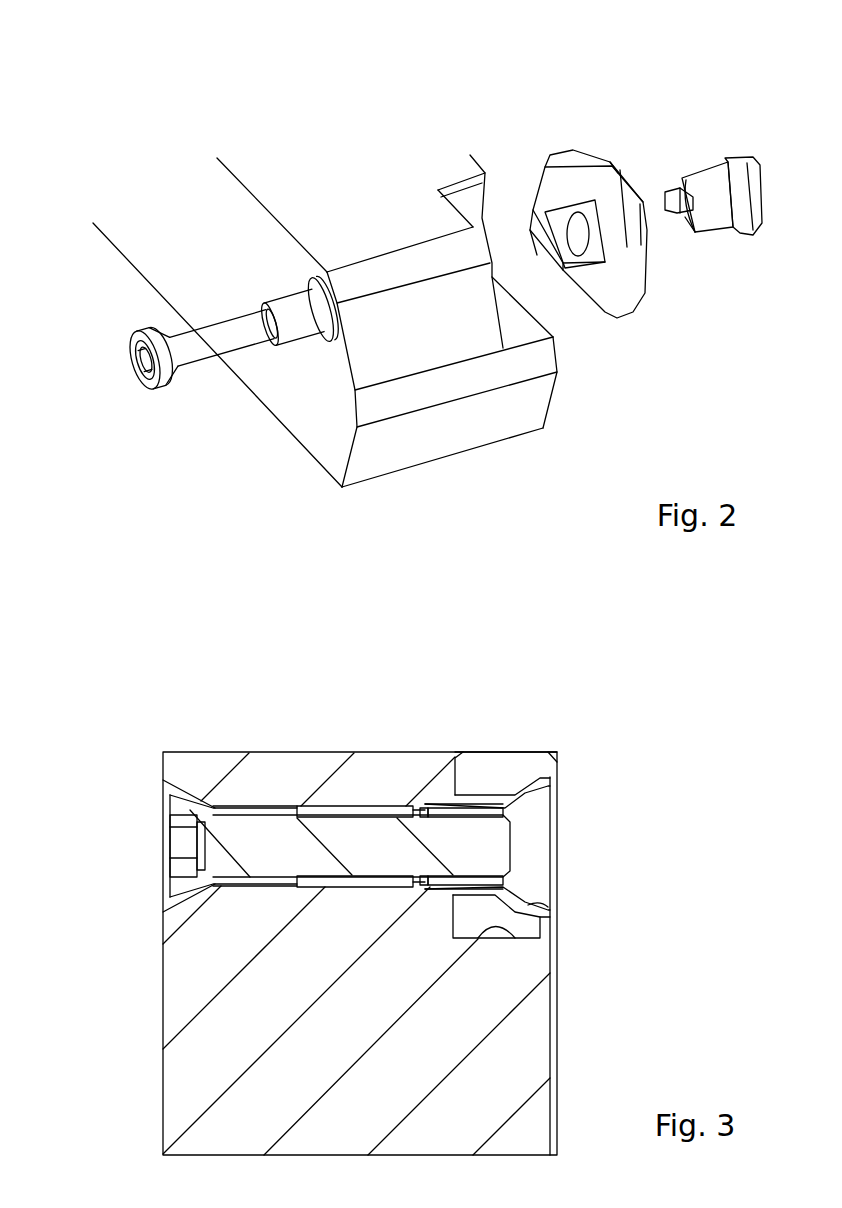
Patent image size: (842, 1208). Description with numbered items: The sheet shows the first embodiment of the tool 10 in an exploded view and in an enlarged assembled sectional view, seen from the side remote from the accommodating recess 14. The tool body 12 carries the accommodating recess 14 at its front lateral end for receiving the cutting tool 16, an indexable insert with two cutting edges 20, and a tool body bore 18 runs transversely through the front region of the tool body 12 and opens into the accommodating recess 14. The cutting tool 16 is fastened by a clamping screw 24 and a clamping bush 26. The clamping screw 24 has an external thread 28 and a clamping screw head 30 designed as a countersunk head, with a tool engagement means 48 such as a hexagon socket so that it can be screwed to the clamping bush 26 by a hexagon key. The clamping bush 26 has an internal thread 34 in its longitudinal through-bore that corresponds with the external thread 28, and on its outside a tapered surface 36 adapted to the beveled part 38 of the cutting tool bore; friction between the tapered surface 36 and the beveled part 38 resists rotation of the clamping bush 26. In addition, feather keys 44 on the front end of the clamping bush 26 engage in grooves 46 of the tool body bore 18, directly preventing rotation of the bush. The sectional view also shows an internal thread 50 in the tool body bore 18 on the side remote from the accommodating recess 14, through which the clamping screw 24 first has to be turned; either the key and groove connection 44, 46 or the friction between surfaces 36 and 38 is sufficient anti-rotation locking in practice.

In FIG. 2, the tool 10 is at (358, 140).
In FIG. 2, the tool body 12 is at (197, 237).
In FIG. 2, the accommodating recess 14 is at (517, 322).
In FIG. 3, the accommodating recess 14 is at (518, 938).
In FIG. 2, the cutting tool 16 is at (591, 148).
In FIG. 3, the cutting tool 16 is at (562, 754).
In FIG. 2, the tool body bore 18 is at (325, 340).
In FIG. 3, the tool body bore 18 is at (349, 806).
In FIG. 2, the cutting edges 20 is at (628, 205).
In FIG. 2, the clamping screw 24 is at (167, 327).
In FIG. 3, the clamping screw 24 is at (273, 857).
In FIG. 2, the clamping bush 26 is at (701, 165).
In FIG. 3, the clamping bush 26 is at (526, 791).
In FIG. 2, the external thread 28 is at (293, 330).
In FIG. 3, the external thread 28 is at (468, 815).
In FIG. 2, the clamping screw head 30 is at (176, 365).
In FIG. 3, the internal thread 34 is at (443, 815).
In FIG. 2, the tapered surface 36 is at (733, 222).
In FIG. 3, the tapered surface 36 is at (500, 910).
In FIG. 3, the beveled part 38 is at (547, 905).
In FIG. 2, the feather keys 44 is at (684, 232).
In FIG. 3, the feather keys 44 is at (423, 812).
In FIG. 3, the grooves 46 is at (418, 806).
In FIG. 2, the tool engagement means 48 is at (135, 373).
In FIG. 3, the tool engagement means 48 is at (180, 842).
In FIG. 3, the internal thread 50 is at (250, 806).